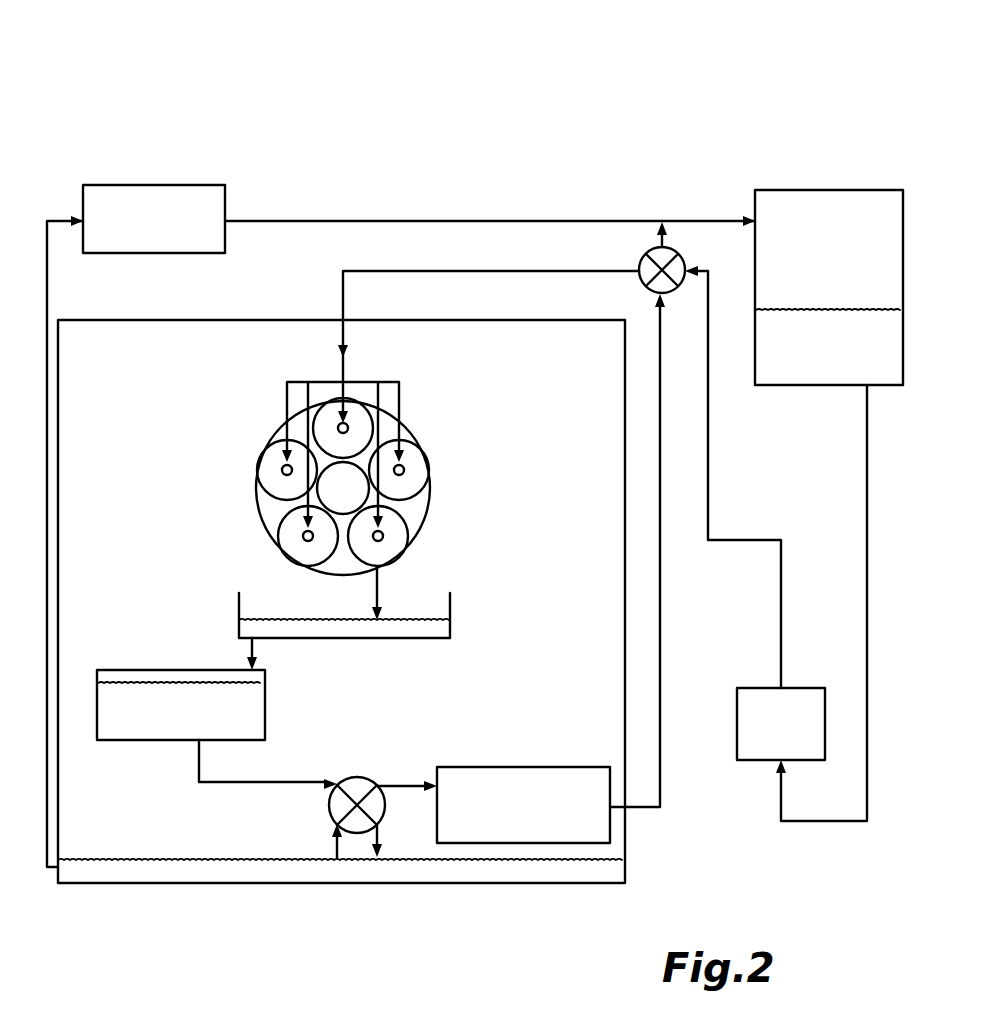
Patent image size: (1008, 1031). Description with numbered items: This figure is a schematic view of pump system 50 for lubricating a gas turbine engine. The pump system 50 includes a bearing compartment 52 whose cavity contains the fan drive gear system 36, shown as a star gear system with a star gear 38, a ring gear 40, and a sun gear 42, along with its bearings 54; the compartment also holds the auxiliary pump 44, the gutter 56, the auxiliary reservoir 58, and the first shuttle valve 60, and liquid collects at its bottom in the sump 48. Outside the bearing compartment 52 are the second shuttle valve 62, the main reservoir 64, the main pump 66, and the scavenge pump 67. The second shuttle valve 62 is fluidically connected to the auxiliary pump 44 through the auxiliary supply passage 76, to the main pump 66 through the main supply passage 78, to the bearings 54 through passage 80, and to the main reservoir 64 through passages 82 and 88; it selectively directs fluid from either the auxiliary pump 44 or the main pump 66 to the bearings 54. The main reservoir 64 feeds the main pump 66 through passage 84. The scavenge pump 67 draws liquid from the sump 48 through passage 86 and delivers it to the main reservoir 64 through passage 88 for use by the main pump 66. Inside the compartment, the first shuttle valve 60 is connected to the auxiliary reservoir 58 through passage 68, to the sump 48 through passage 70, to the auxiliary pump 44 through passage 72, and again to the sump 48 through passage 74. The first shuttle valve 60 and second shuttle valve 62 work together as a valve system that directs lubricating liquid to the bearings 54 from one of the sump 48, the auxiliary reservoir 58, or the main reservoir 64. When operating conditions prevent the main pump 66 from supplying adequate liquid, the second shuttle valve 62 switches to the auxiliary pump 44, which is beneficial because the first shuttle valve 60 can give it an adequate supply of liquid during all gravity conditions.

The pump system 50 is at (195, 110).
The scavenge pump 67 is at (213, 185).
The passage 88 is at (515, 221).
The main reservoir 64 is at (795, 190).
The passage 86 is at (47, 272).
The bearing compartment 52 is at (264, 318).
The sump 48 is at (145, 883).
The passage 80 is at (490, 271).
The second shuttle valve 62 is at (650, 256).
The passage 82 is at (666, 233).
The fan drive gear system 36 is at (284, 425).
The star gear 38 is at (268, 498).
The ring gear 40 is at (252, 482).
The sun gear 42 is at (292, 506).
The bearings 54 is at (410, 470).
The gutter 56 is at (405, 638).
The auxiliary reservoir 58 is at (140, 670).
The passage 68 is at (220, 782).
The first shuttle valve 60 is at (362, 778).
The passage 70 is at (337, 846).
The passage 74 is at (385, 836).
The passage 72 is at (405, 786).
The auxiliary pump 44 is at (610, 827).
The passage 76 is at (660, 557).
The passage 78 is at (760, 540).
The main pump 66 is at (745, 688).
The passage 84 is at (867, 425).